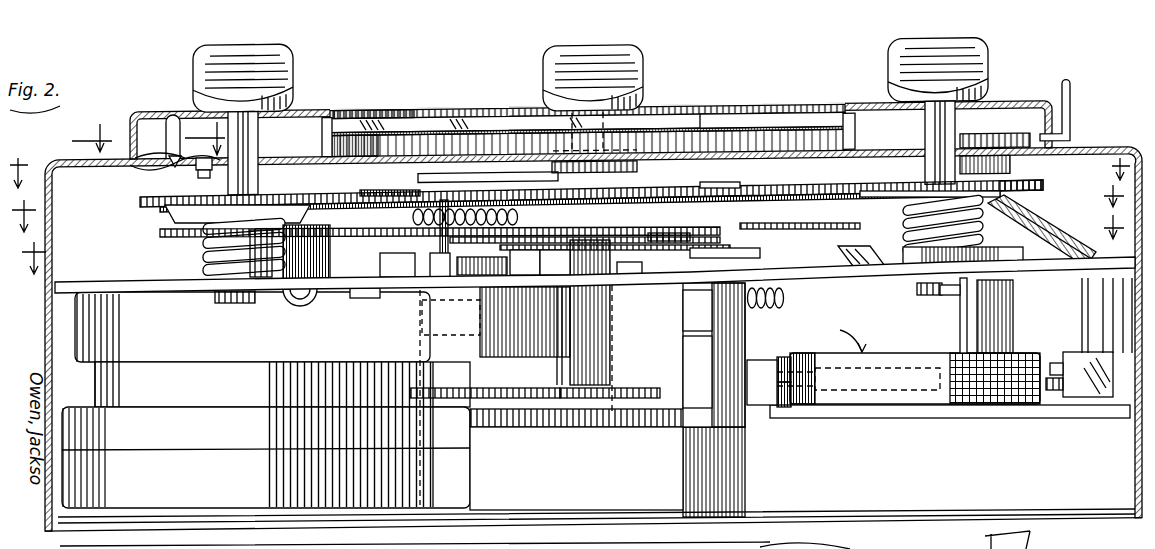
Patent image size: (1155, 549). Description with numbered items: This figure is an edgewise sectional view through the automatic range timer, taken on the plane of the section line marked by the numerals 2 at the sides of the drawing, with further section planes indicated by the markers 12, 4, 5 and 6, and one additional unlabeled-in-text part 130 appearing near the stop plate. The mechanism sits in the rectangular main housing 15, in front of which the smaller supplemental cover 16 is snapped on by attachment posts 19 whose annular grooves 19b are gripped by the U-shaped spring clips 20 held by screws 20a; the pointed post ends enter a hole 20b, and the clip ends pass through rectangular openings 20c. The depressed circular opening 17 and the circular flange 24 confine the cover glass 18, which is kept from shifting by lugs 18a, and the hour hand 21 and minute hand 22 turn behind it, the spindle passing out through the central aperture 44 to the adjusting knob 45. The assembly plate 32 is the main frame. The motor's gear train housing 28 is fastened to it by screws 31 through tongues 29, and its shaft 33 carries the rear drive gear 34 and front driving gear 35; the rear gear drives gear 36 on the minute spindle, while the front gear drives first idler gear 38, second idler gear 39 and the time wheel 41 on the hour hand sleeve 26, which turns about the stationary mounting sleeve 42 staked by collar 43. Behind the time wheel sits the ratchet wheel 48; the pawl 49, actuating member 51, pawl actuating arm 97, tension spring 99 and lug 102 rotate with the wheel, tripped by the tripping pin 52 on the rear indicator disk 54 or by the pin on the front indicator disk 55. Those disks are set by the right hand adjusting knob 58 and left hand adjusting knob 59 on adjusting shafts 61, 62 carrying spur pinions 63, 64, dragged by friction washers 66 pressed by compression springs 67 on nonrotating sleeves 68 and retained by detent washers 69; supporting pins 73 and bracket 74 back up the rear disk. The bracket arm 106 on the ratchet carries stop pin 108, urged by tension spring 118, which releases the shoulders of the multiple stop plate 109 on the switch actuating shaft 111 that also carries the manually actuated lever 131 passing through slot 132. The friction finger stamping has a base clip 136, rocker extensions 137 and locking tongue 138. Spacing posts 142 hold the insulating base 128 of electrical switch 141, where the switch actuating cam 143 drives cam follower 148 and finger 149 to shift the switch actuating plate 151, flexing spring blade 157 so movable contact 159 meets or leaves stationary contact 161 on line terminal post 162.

The main housing 15 is at (48, 333).
The supplemental cover 16 is at (332, 114).
The depressed circular opening 17 is at (370, 114).
The cover glass 18 is at (432, 122).
The lugs 18a is at (856, 146).
The attachment posts 19 is at (168, 122).
The annular groove 19b is at (172, 157).
The spring clips 20 is at (145, 176).
The bolts or screws 20a is at (210, 175).
The hole 20b is at (185, 172).
The rectangular openings 20c is at (134, 160).
The hour hand 21 is at (460, 179).
The minute hand 22 is at (637, 173).
The circular flange 24 is at (768, 122).
The hour hand sleeve 26 is at (620, 210).
The gear train housing 28 is at (242, 356).
The tongues 29 is at (362, 298).
The fastening screws 31 is at (296, 306).
The assembly plate 32 is at (108, 282).
The shaft 33 is at (506, 388).
The rear drive gear 34 is at (522, 427).
The front driving gear 35 is at (470, 278).
The gear 36 is at (650, 378).
The first idler gear 38 is at (440, 278).
The second idler gear 39 is at (330, 252).
The time wheel 41 is at (790, 223).
The mounting sleeve 42 is at (612, 340).
The staking collar 43 is at (642, 276).
The central aperture 44 is at (630, 122).
The adjusting knob 45 is at (645, 70).
The ratchet wheel 48 is at (520, 250).
The pawl 49 is at (590, 246).
The actuating member 51 is at (700, 237).
The tripping pin 52 is at (386, 182).
The rear indicator disk 54 is at (728, 245).
The front indicator disk 55 is at (722, 188).
The right hand adjusting knob 58 is at (990, 68).
The left hand adjusting knob 59 is at (195, 62).
The adjusting shaft 61 is at (955, 128).
The adjusting shaft 62 is at (252, 120).
The spur pinion 63 is at (1043, 186).
The spur pinion 64 is at (160, 202).
The friction washers 66 is at (870, 200).
The compression springs 67 is at (905, 214).
The nonrotating sleeve 68 is at (910, 236).
The detent washer 69 is at (940, 292).
The supporting pins 73 is at (438, 280).
The bracket 74 is at (1030, 222).
The pawl actuating arm 97 is at (548, 212).
The tension spring 99 is at (440, 232).
The lug 102 is at (690, 472).
The bracket arm 106 is at (705, 252).
The stop pin 108 is at (682, 284).
The multiple stop plate 109 is at (786, 290).
The switch actuating shaft 111 is at (1010, 178).
The tension spring 118 is at (775, 344).
The insulating base 128 is at (818, 418).
The latch 130 is at (840, 256).
The manually actuated lever 131 is at (1070, 100).
The slot 132 is at (1035, 146).
The base clip 136 is at (1000, 265).
The rocker extensions 137 is at (917, 290).
The locking tongue 138 is at (985, 286).
The electrical switch 141 is at (839, 332).
The spacing posts 142 is at (1088, 418).
The switch actuating cam 143 is at (1068, 358).
The cam follower 148 is at (1052, 392).
The finger 149 is at (1095, 380).
The switch actuating plate 151 is at (852, 392).
The spring blade 157 is at (920, 353).
The movable contact 159 is at (812, 350).
The stationary contact 161 is at (780, 408).
The line terminal post 162 is at (776, 362).
The section line 12 is at (144, 136).
The section line 2 is at (14, 173).
The section line 4 is at (1125, 172).
The section line 5 is at (572, 208).
The section line 6 is at (577, 244).